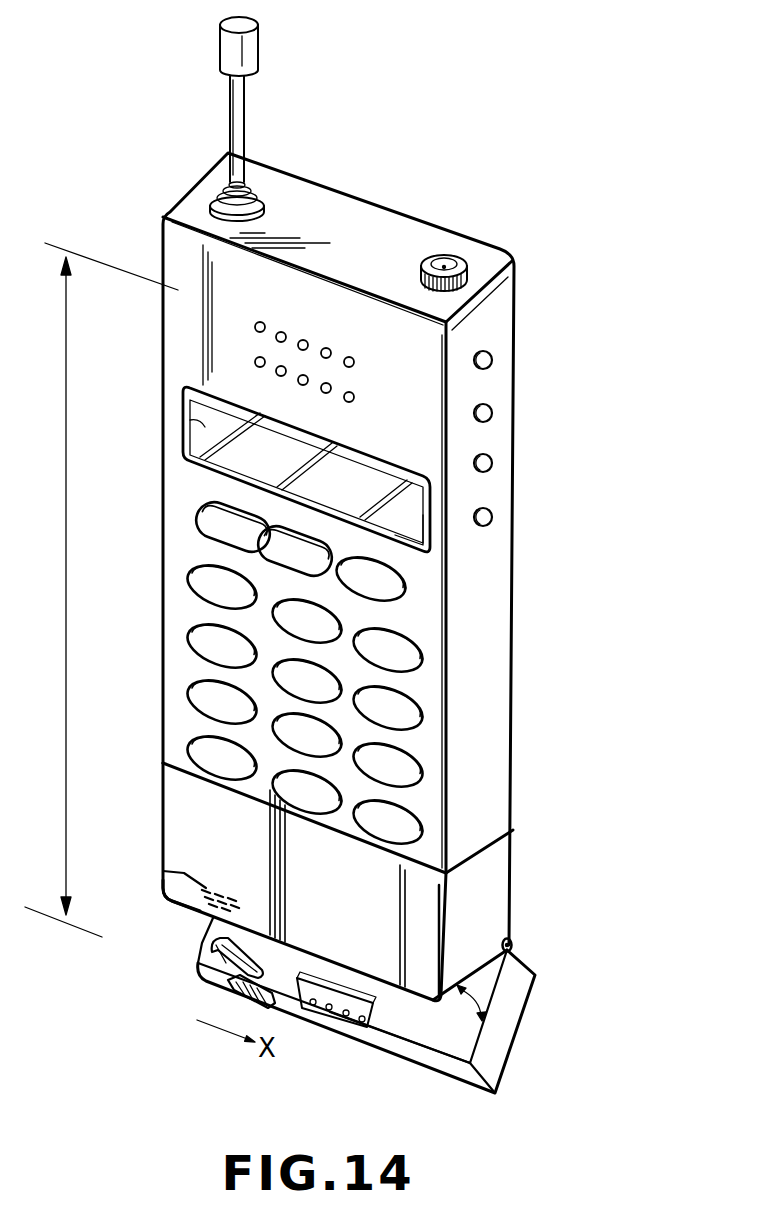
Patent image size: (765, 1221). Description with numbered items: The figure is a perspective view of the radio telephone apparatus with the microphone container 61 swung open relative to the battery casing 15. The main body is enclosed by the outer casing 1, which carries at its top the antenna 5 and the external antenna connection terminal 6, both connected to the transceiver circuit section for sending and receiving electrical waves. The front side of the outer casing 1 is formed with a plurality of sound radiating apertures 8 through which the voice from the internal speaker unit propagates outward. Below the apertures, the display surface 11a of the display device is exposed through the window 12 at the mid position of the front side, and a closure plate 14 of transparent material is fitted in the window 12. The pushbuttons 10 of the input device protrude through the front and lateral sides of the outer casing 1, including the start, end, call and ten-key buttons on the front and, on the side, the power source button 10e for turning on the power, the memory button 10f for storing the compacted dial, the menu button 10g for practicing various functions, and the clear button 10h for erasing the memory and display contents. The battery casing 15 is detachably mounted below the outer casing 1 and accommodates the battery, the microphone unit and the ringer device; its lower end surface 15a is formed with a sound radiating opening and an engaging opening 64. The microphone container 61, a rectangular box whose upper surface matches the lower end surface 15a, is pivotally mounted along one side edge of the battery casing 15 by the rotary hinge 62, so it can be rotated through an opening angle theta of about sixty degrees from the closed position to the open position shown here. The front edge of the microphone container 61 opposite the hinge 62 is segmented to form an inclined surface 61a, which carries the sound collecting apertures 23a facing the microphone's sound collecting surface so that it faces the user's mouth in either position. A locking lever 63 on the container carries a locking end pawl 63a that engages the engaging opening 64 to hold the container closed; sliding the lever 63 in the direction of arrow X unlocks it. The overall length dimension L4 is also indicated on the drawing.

The outer casing 1 is at (503, 390).
The antenna 5 is at (240, 108).
The external antenna connection terminal 6 is at (450, 256).
The sound radiating apertures 8 is at (318, 318).
The pushbuttons 10 is at (428, 614).
The power source button 10e is at (492, 355).
The memory button 10f is at (493, 414).
The menu button 10g is at (493, 464).
The clear button 10h is at (493, 518).
The display surface 11a is at (410, 522).
The window 12 is at (198, 433).
The closure plate 14 is at (420, 494).
The battery casing 15 is at (497, 880).
The lower end surface 15a is at (178, 905).
The sound collecting apertures 23a is at (330, 1008).
The microphone container 61 is at (497, 1034).
The inclined surface 61a is at (355, 1022).
The rotary hinge 62 is at (516, 945).
The locking lever 63 is at (213, 983).
The locking end pawl 63a is at (210, 946).
The engaging opening 64 is at (163, 872).
The length L4 is at (101, 590).